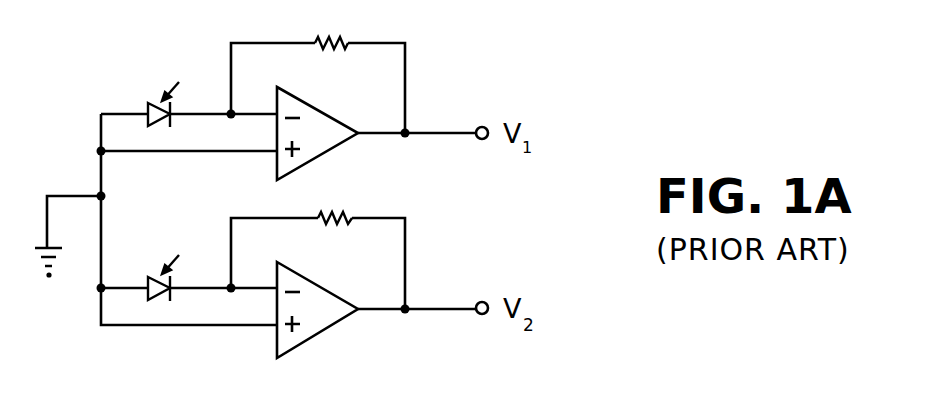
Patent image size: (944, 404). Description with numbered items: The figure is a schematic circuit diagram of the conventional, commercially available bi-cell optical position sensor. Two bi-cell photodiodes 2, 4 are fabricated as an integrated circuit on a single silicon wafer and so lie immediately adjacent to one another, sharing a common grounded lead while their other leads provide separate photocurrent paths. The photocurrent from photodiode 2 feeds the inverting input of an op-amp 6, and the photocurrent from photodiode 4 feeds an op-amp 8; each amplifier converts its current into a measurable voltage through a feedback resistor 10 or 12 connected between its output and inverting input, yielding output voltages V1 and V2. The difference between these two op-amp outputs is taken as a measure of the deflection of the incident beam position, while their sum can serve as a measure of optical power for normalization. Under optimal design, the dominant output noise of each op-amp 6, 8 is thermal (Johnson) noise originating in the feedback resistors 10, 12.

The bi-cell photodiode 2 is at (148, 109).
The bi-cell photodiode 4 is at (148, 283).
The op-amp 6 is at (328, 110).
The op-amp 8 is at (328, 287).
The feedback resistor 10 is at (346, 42).
The feedback resistor 12 is at (346, 217).